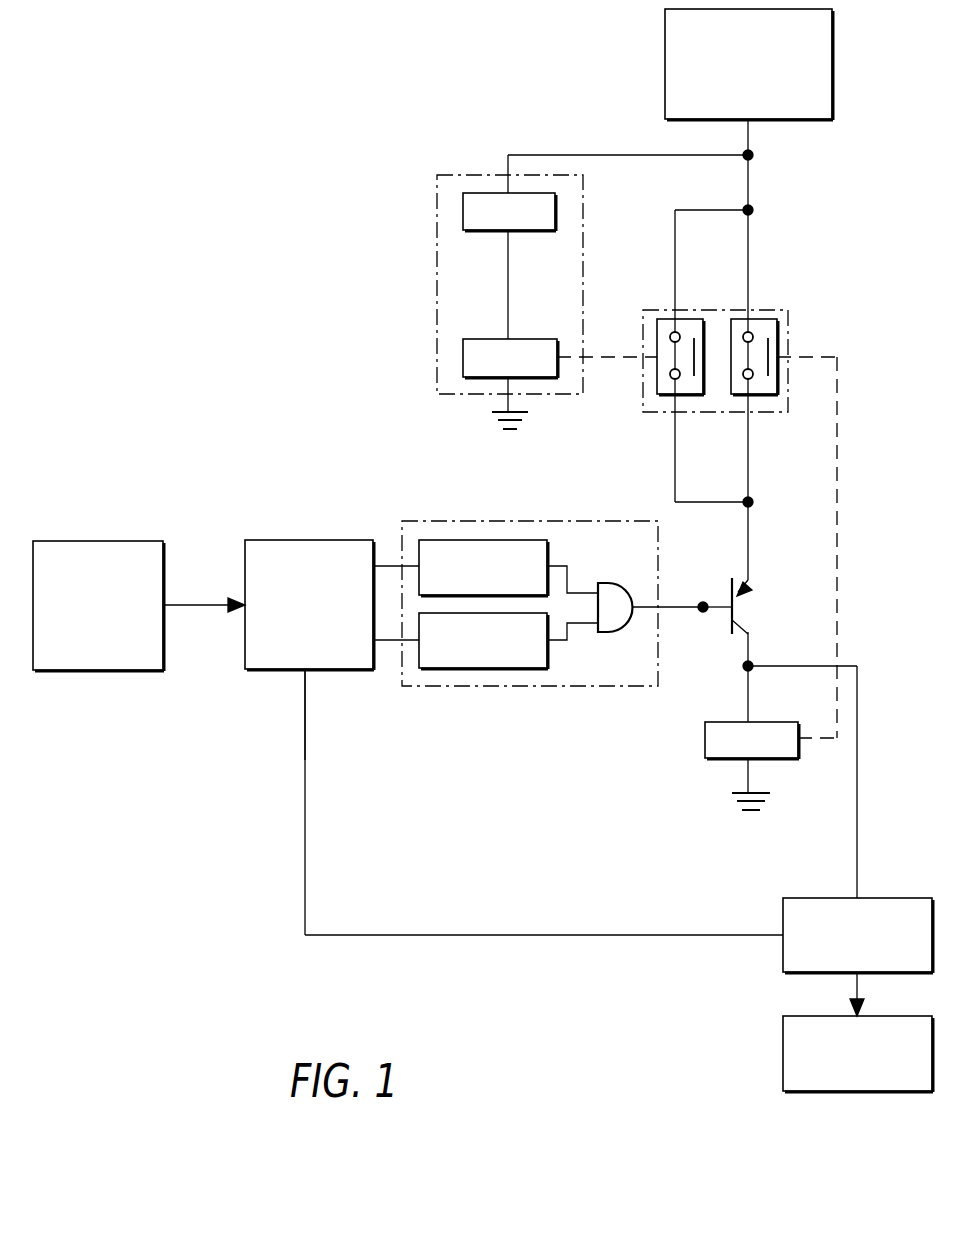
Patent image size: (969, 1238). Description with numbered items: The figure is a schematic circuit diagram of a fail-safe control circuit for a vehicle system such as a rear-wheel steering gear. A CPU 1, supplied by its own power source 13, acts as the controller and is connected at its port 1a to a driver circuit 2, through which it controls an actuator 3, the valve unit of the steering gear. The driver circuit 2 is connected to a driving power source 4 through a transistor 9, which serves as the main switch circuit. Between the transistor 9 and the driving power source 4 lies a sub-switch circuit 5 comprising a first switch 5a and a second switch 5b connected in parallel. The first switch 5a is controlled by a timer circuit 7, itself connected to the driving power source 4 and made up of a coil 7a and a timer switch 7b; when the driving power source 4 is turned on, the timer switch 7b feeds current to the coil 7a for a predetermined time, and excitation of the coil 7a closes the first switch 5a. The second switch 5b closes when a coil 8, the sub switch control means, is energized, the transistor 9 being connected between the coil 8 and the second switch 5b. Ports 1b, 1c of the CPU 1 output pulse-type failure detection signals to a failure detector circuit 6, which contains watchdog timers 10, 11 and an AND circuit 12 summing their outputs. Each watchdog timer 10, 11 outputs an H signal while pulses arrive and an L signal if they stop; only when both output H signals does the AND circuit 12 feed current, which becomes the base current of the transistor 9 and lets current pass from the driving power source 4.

The CPU 1 is at (285, 540).
The port 1a is at (302, 672).
The port 1b is at (378, 566).
The port 1c is at (375, 642).
The driver circuit 2 is at (783, 905).
The actuator 3 is at (783, 1050).
The driving power source 4 is at (665, 68).
The sub-switch circuit 5 is at (788, 300).
The first switch 5a is at (693, 396).
The second switch 5b is at (773, 396).
The failure detector circuit 6 is at (563, 688).
The timer circuit 7 is at (437, 245).
The coil 7a is at (463, 365).
The timer switch 7b is at (478, 193).
The coil 8 is at (705, 750).
The transistor 9 is at (745, 590).
The watchdog timer 10 is at (515, 540).
The watchdog timer 11 is at (470, 670).
The AND circuit 12 is at (620, 583).
The power source 13 is at (107, 541).